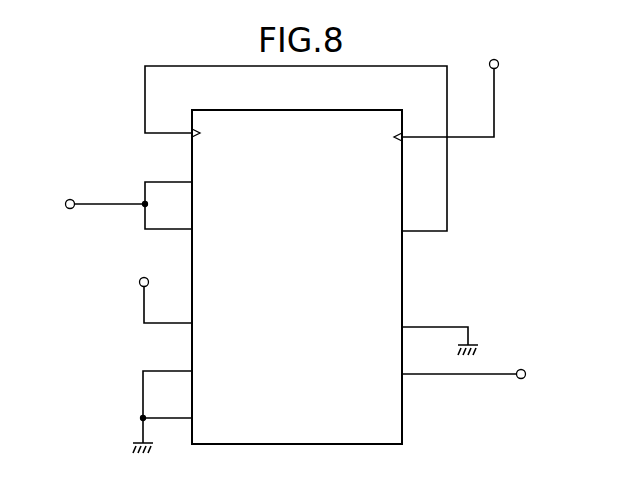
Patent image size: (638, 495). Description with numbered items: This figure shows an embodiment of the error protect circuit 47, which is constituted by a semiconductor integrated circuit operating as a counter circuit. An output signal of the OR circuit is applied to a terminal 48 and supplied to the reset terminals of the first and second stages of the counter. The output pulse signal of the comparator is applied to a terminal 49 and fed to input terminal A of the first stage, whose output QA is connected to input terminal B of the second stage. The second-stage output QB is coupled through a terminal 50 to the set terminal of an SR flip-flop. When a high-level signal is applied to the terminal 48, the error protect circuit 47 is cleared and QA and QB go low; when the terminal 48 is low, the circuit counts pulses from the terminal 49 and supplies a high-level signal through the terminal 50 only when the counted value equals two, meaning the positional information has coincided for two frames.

The error protect circuit 47 is at (293, 109).
The terminal 48 is at (71, 198).
The terminal 49 is at (498, 64).
The terminal 50 is at (519, 369).